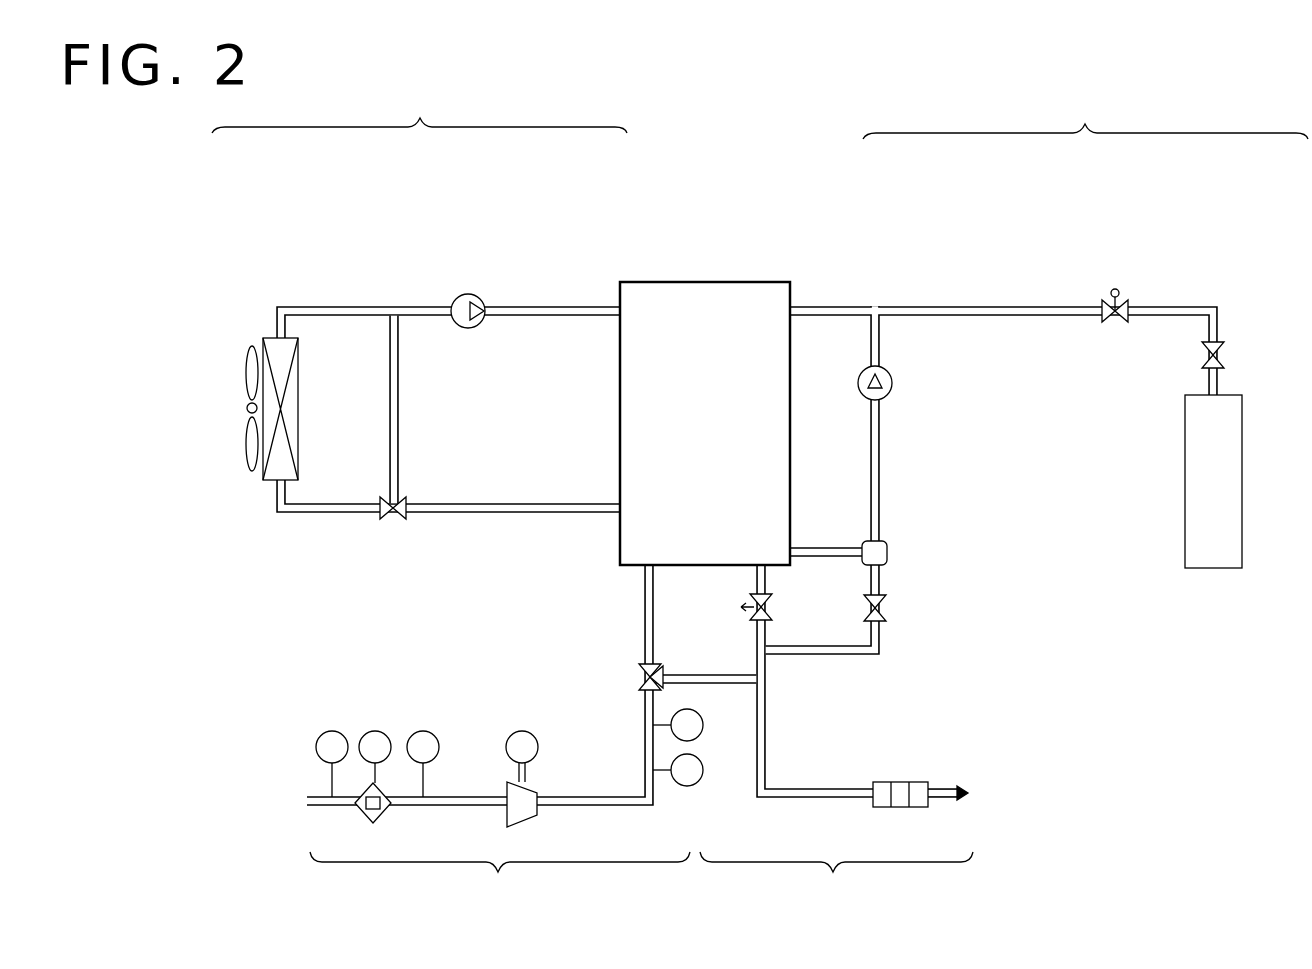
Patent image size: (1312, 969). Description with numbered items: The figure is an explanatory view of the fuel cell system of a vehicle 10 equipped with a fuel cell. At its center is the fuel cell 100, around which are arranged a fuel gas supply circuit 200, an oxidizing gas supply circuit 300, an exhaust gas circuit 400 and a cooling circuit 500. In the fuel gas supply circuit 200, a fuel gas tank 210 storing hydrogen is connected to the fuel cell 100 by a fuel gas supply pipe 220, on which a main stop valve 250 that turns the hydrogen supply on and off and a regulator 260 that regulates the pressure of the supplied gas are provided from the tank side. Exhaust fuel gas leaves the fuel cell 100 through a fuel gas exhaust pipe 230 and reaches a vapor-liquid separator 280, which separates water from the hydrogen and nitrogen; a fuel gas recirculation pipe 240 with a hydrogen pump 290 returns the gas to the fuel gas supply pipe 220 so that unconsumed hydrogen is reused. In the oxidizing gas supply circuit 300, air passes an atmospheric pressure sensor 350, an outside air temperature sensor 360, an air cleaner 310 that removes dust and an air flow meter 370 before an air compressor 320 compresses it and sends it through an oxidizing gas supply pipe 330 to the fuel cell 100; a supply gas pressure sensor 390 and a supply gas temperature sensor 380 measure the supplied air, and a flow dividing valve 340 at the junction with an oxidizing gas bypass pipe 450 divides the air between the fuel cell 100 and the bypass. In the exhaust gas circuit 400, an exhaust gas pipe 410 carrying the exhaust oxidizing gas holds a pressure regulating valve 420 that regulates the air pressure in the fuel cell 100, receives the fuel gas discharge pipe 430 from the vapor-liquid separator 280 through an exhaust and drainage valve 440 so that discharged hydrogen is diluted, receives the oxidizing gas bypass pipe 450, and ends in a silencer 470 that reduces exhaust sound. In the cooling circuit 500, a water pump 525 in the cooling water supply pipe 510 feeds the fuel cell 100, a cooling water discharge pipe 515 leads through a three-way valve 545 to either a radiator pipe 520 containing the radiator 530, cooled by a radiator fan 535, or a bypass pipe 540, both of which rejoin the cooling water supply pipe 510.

The vehicle 10 is at (815, 149).
The fuel cell 100 is at (766, 281).
The fuel gas supply circuit 200 is at (1085, 116).
The fuel gas tank 210 is at (1242, 393).
The fuel gas supply pipe 220 is at (963, 306).
The fuel gas exhaust pipe 230 is at (818, 547).
The fuel gas recirculation pipe 240 is at (880, 348).
The main stop valve 250 is at (1223, 342).
The regulator 260 is at (1128, 302).
The vapor-liquid separator 280 is at (888, 553).
The hydrogen pump 290 is at (892, 390).
The oxidizing gas supply circuit 300 is at (500, 880).
The air cleaner 310 is at (358, 813).
The air compressor 320 is at (502, 817).
The oxidizing gas supply pipe 330 is at (653, 788).
The flow dividing valve 340 is at (655, 627).
The atmospheric pressure sensor 350 is at (327, 730).
The outside air temperature sensor 360 is at (372, 728).
The air flow meter 370 is at (422, 728).
The supply gas temperature sensor 380 is at (730, 767).
The supply gas pressure sensor 390 is at (728, 715).
The exhaust gas circuit 400 is at (836, 880).
The exhaust gas pipe 410 is at (813, 789).
The pressure regulating valve 420 is at (770, 606).
The fuel gas discharge pipe 430 is at (857, 656).
The exhaust and drainage valve 440 is at (884, 610).
The oxidizing gas bypass pipe 450 is at (688, 648).
The silencer 470 is at (912, 782).
The cooling circuit 500 is at (419, 109).
The cooling water supply pipe 510 is at (589, 306).
The cooling water discharge pipe 515 is at (478, 503).
The radiator pipe 520 is at (310, 503).
The water pump 525 is at (463, 293).
The radiator 530 is at (300, 386).
The radiator fan 535 is at (253, 345).
The bypass pipe 540 is at (390, 330).
The three-way valve 545 is at (390, 515).